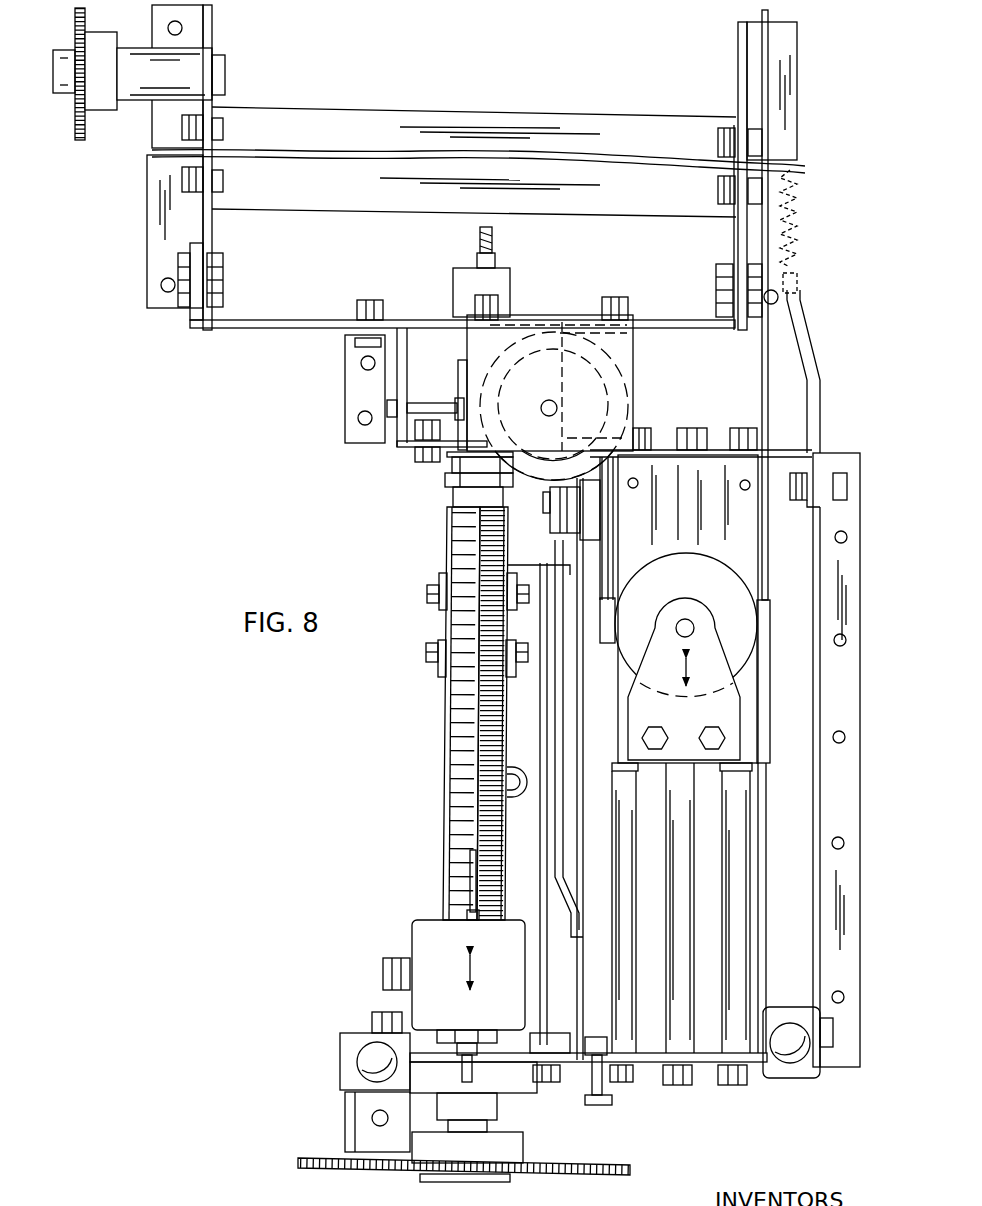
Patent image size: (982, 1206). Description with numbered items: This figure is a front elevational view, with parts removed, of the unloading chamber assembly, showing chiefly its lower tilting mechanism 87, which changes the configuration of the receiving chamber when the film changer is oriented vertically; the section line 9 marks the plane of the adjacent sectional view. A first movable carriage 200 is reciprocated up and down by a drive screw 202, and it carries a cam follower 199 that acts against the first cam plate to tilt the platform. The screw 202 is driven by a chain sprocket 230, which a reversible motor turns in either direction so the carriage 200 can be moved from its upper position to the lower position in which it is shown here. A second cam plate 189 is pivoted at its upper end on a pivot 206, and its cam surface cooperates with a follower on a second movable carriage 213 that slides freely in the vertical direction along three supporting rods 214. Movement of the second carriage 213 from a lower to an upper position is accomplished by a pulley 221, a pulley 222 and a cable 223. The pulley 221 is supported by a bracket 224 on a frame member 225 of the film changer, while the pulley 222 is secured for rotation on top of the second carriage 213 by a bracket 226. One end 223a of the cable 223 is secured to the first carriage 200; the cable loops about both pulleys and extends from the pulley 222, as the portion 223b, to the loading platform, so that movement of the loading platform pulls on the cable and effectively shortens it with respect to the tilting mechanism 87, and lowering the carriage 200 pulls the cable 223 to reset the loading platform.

The section line 9- 9 is at (488, 467).
The tilting mechanism 87 is at (440, 555).
The second cam plate 189 is at (578, 805).
The cam follower 199 is at (390, 976).
The first movable carriage 200 is at (425, 937).
The screw 202 is at (460, 772).
The pivot 206 is at (570, 512).
The second movable carriage 213 is at (758, 728).
The supporting rods 214 is at (628, 828).
The pulley 221 is at (559, 457).
The pulley 222 is at (732, 582).
The cable 223 is at (765, 410).
The end of cable 223a is at (466, 881).
The cable portion 223b is at (780, 62).
The bracket 224 is at (625, 372).
The frame member 225 is at (700, 330).
The bracket 226 is at (662, 656).
The chain sprocket 230 is at (370, 1170).